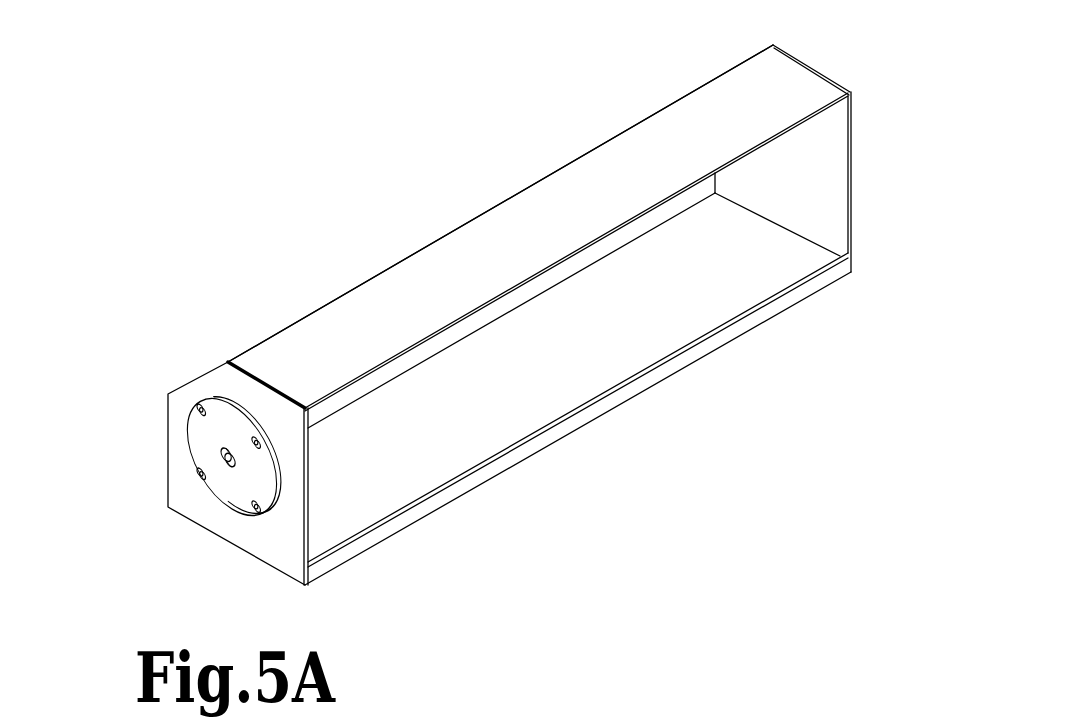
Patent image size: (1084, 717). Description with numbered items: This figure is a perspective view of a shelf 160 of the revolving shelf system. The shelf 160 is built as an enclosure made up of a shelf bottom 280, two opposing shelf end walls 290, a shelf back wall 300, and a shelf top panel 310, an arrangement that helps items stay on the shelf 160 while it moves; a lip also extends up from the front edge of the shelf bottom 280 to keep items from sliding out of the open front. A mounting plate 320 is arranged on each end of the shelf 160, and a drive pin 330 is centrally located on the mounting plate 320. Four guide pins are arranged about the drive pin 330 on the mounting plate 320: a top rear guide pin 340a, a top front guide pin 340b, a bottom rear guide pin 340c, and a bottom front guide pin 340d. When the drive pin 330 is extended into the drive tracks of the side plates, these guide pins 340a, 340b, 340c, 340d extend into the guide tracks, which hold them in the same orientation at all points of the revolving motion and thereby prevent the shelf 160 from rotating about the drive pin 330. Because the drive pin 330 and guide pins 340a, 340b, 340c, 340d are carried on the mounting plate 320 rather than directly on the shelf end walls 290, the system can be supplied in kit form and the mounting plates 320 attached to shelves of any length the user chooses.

The shelf 160 is at (253, 240).
The shelf bottom 280 is at (602, 338).
The shelf end wall 290 is at (780, 177).
The shelf back wall 300 is at (648, 220).
The shelf top panel 310 is at (613, 183).
The mounting plate 320 is at (207, 445).
The drive pin 330 is at (229, 466).
The top rear guide pin 340a is at (202, 410).
The top front guide pin 340b is at (257, 445).
The bottom rear guide pin 340c is at (202, 477).
The bottom front guide pin 340d is at (257, 510).